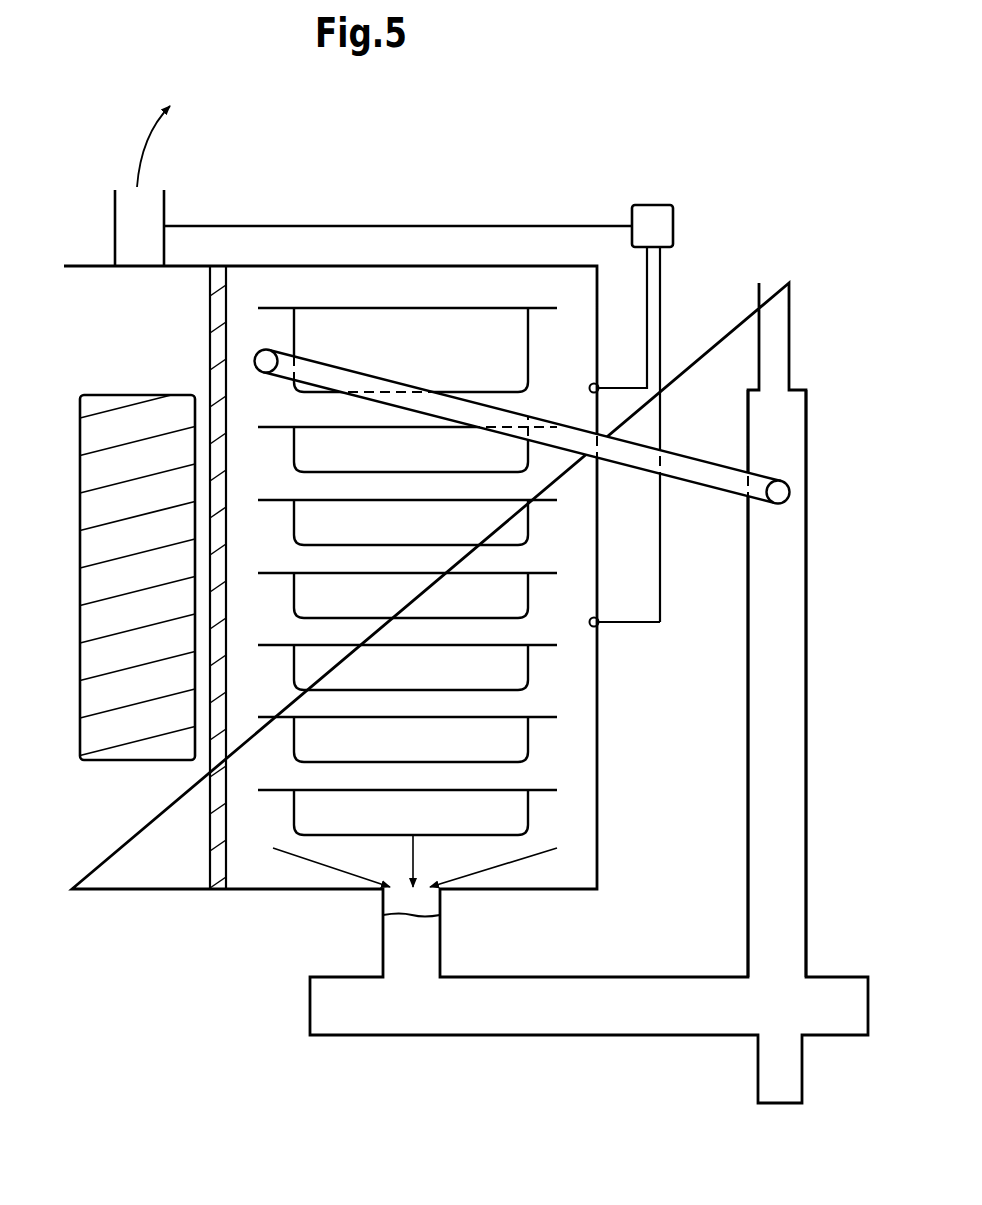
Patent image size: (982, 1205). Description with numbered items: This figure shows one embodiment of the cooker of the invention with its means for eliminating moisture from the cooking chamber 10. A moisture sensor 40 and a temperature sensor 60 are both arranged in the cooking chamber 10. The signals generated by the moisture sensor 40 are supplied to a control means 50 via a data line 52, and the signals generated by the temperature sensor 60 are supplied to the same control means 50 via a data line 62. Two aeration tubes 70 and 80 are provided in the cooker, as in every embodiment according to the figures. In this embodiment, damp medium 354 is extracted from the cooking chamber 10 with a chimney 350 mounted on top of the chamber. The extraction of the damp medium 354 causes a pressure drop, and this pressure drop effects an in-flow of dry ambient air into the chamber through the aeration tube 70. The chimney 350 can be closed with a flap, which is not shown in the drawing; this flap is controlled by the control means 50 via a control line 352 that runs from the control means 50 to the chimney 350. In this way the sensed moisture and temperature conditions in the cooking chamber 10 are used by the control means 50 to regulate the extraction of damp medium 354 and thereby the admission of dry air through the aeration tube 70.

The cooking chamber 10 is at (583, 770).
The moisture sensor 40 is at (598, 624).
The control means 50 is at (648, 220).
The data line 52 is at (660, 333).
The temperature sensor 60 is at (598, 390).
The data line 62 is at (647, 292).
The aeration tube 70 is at (708, 488).
The aeration tube 80 is at (806, 595).
The chimney 350 is at (113, 215).
The control line 352 is at (457, 223).
The damp medium 354 is at (178, 132).